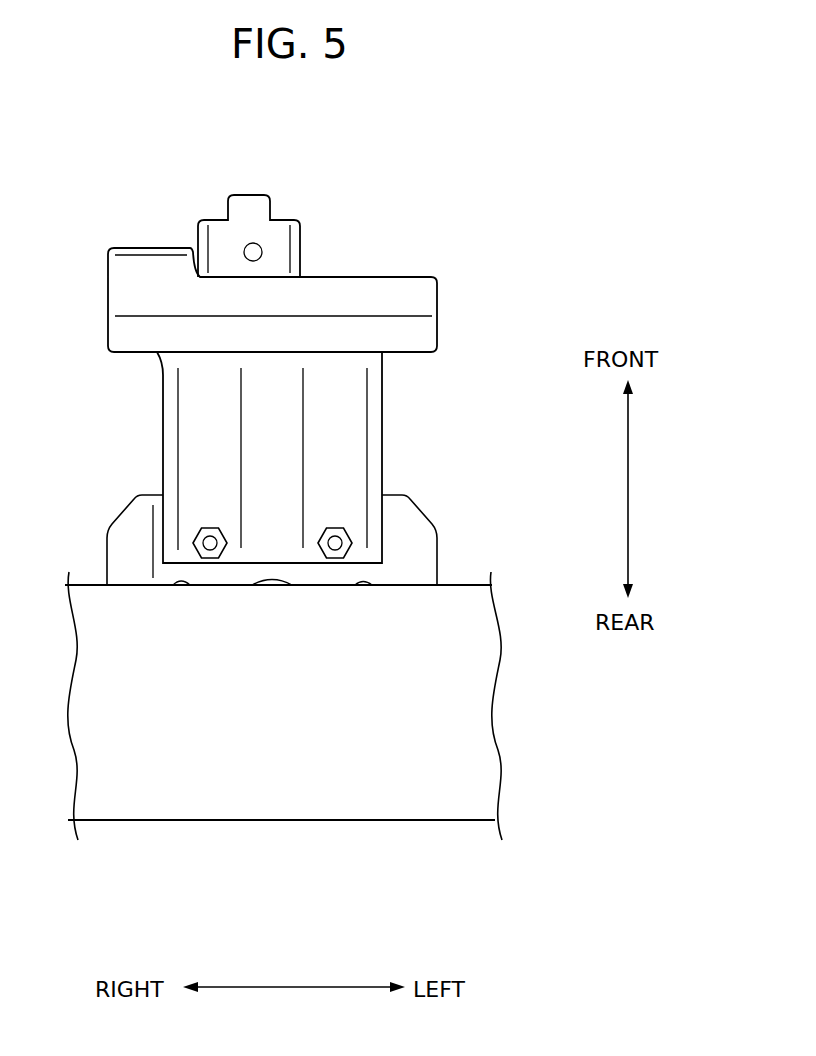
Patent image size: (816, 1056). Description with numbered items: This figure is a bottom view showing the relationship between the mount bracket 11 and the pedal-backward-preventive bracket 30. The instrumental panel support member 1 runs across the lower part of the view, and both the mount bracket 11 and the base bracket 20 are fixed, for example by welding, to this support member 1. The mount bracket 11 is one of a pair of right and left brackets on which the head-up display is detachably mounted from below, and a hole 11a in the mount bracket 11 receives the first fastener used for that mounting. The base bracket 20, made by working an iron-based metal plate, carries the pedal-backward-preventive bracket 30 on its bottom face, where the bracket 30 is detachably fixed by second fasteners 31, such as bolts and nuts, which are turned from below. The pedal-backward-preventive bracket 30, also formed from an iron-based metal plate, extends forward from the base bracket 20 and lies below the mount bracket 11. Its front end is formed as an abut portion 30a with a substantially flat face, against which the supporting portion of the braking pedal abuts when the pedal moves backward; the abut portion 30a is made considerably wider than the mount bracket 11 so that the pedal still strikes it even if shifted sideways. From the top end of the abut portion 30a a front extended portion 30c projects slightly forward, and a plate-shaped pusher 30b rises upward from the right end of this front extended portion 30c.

The instrumental panel support member 1 is at (419, 800).
The mount bracket 11 is at (308, 230).
The hole 11a is at (259, 246).
The base bracket 20 is at (431, 529).
The pedal-backward-preventive bracket 30 is at (380, 402).
The abut portion 30a is at (358, 315).
The pusher 30b is at (153, 248).
The front extended portion 30c is at (438, 290).
The second fastener 31 is at (210, 527).